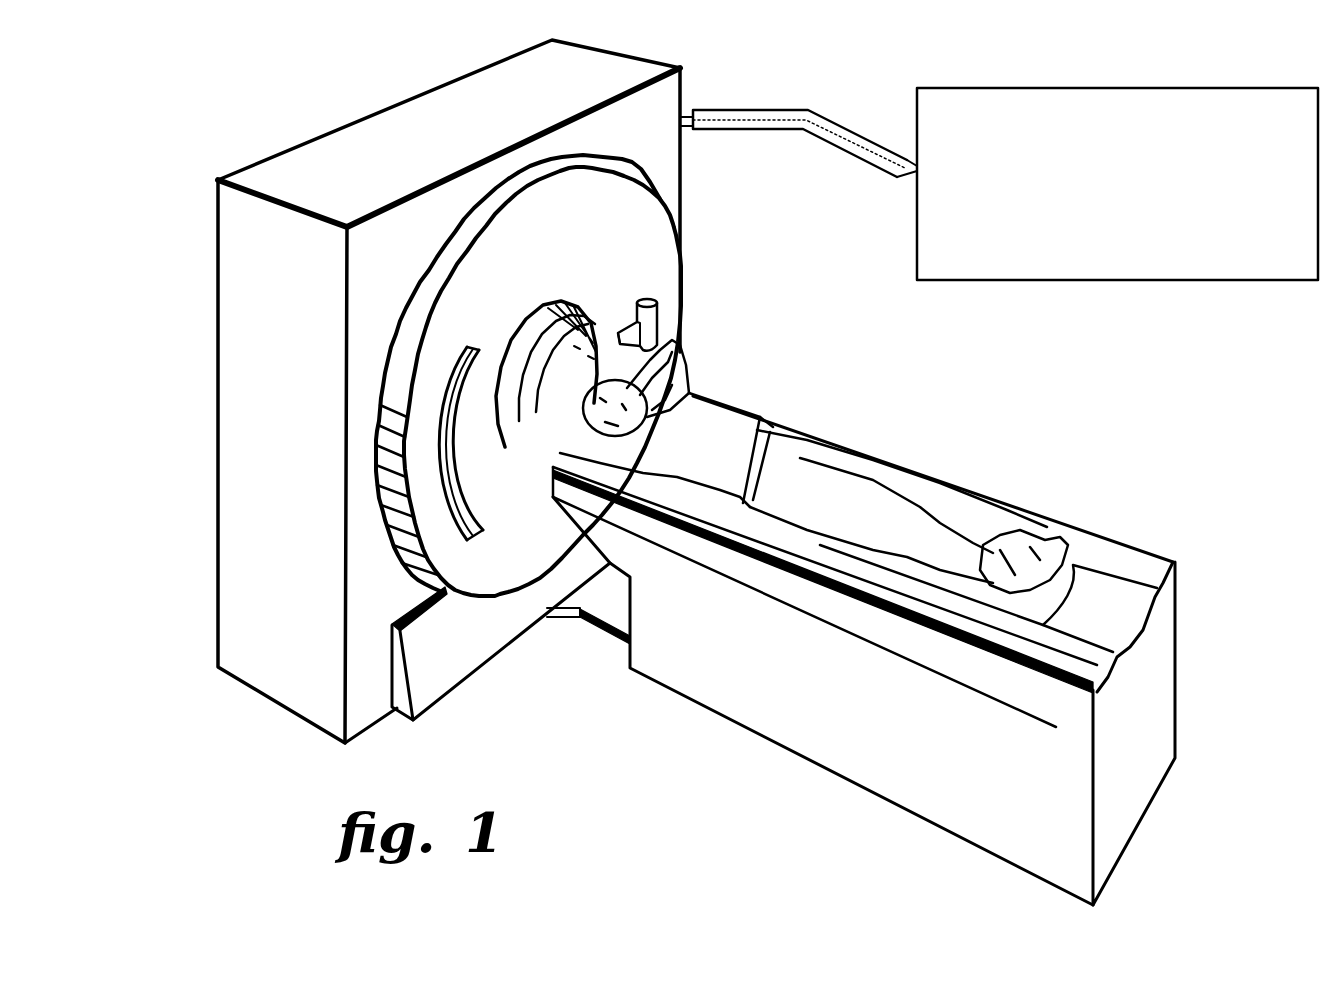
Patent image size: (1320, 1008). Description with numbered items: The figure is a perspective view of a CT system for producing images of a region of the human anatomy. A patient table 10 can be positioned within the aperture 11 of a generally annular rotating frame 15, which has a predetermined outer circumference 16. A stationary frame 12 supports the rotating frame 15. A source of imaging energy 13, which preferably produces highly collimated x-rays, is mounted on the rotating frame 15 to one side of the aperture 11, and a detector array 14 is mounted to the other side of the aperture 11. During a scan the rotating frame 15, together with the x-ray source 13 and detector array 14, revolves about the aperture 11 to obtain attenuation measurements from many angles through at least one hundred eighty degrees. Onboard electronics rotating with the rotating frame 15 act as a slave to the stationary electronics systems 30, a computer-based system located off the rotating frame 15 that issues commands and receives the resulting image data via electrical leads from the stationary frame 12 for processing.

The patient table 10 is at (731, 696).
The aperture 11 is at (416, 316).
The stationary frame 12 is at (258, 378).
The source of imaging energy 13 is at (673, 315).
The detector array 14 is at (447, 420).
The rotating frame 15 is at (427, 547).
The outer circumference 16 is at (673, 217).
The stationary electronics systems 30 is at (1138, 265).